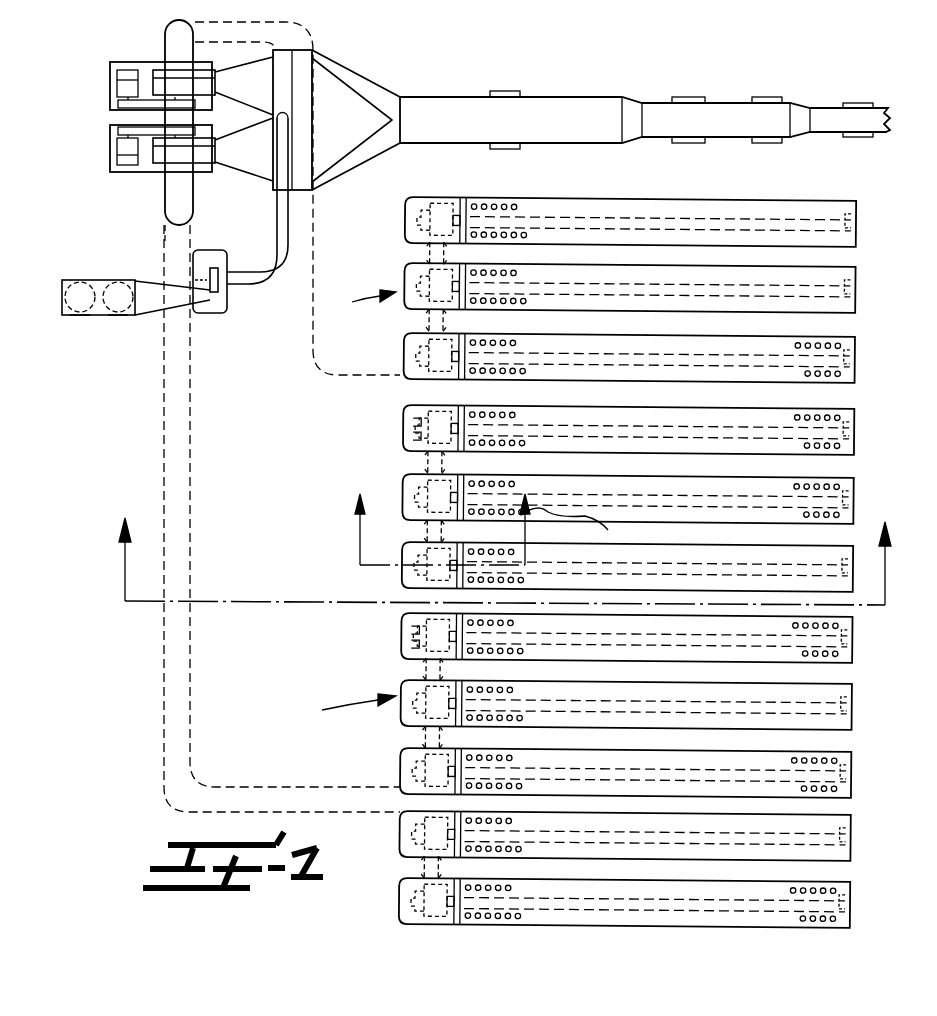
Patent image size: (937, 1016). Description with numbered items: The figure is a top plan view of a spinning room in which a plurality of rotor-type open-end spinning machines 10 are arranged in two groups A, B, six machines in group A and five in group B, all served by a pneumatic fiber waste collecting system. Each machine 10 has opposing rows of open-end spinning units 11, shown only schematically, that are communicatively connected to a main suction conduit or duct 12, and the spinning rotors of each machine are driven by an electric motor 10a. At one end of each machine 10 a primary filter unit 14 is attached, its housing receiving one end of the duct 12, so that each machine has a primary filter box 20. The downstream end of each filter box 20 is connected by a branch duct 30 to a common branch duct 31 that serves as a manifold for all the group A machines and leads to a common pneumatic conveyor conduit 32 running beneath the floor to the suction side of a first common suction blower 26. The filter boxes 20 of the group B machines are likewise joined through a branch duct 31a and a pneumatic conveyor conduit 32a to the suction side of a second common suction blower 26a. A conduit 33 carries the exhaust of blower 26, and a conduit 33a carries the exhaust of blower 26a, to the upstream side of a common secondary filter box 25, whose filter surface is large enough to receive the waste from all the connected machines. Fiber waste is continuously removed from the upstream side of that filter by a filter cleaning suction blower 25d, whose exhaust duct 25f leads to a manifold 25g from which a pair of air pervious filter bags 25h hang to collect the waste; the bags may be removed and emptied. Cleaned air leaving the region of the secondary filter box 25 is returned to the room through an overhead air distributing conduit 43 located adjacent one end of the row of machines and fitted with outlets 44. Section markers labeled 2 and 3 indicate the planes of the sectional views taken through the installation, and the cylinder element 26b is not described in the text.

The open-end spinning machine 10 is at (735, 200).
The electric motor 10a is at (850, 210).
The open-end spinning units 11 is at (540, 226).
The main suction conduit 12 is at (636, 214).
The primary filter unit 14 is at (392, 217).
The primary filter box 20 is at (448, 158).
The secondary filter box 25 is at (290, 38).
The filter cleaning suction blower 25d is at (230, 290).
The exhaust duct 25f is at (128, 258).
The manifold 25g is at (80, 282).
The filter bags 25h is at (124, 318).
The first common suction blower 26 is at (148, 52).
The second common suction blower 26a is at (205, 62).
The plate 26b is at (120, 146).
The branch duct 30 is at (412, 424).
The branch duct 31 is at (410, 330).
The branch duct 31a is at (420, 466).
The pneumatic conveyor conduit 32 is at (312, 388).
The pneumatic conveyor conduit 32a is at (190, 658).
The conduit 33 is at (203, 84).
The conduit 33a is at (207, 162).
The air distributing conduit 43 is at (828, 116).
The outlets 44 is at (760, 97).
The section line 2- 2 is at (501, 561).
The section line 3- 3 is at (467, 529).
The group A is at (361, 302).
The group B is at (346, 710).